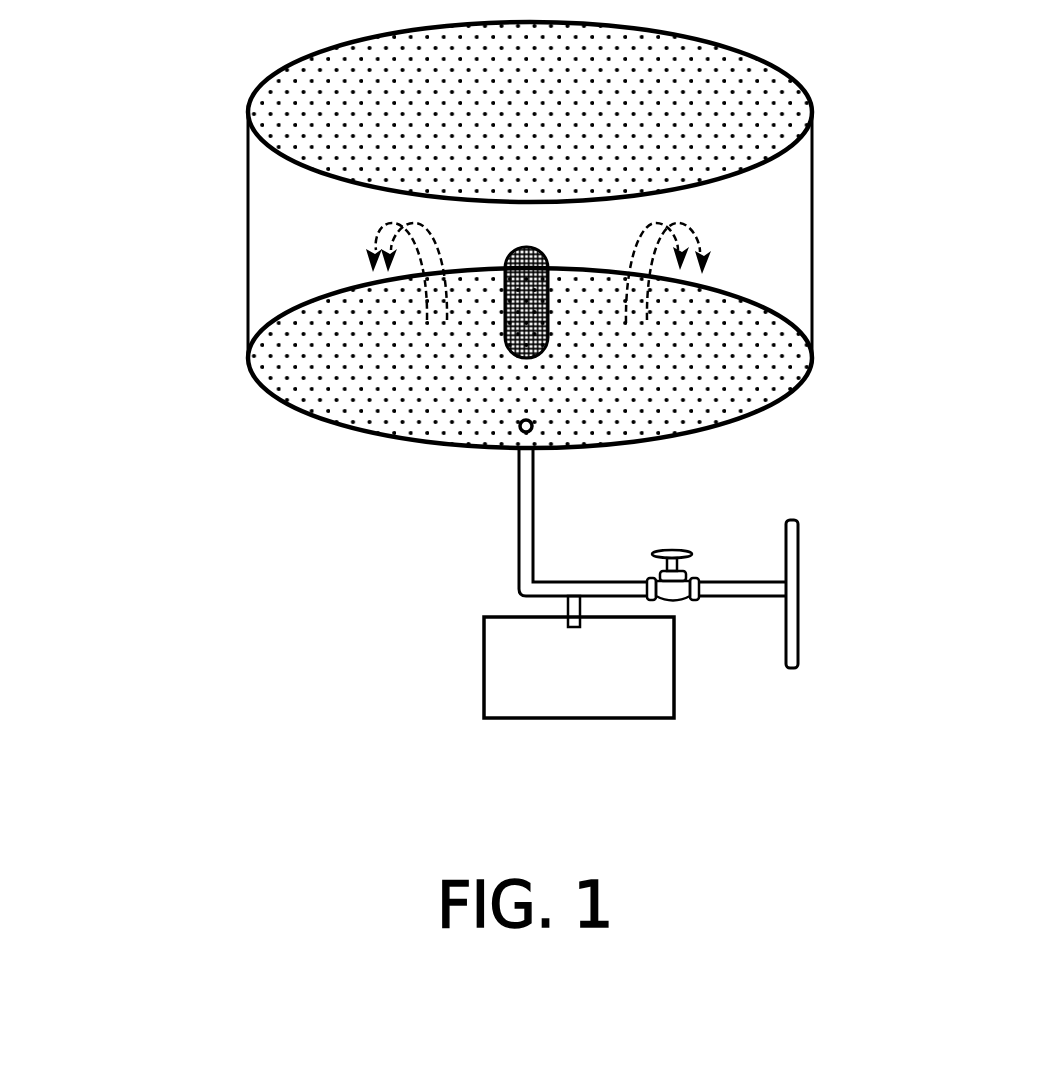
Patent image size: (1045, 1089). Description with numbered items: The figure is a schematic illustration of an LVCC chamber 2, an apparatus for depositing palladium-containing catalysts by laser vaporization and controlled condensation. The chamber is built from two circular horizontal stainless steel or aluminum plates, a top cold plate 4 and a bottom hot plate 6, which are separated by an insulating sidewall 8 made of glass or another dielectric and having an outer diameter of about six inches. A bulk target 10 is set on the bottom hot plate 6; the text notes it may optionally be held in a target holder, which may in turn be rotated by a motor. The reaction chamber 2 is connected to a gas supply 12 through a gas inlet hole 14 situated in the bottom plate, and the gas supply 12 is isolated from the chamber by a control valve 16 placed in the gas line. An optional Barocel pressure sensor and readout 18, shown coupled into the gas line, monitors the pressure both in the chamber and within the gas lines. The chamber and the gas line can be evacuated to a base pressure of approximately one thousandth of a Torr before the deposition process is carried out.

The LVCC chamber 2 is at (132, 78).
The top cold plate 4 is at (773, 92).
The bottom hot plate 6 is at (776, 381).
The sidewall 8 is at (248, 222).
The bulk target 10 is at (488, 329).
The gas supply 12 is at (798, 640).
The gas inlet hole 14 is at (566, 431).
The control valve 16 is at (688, 601).
The Barocel pressure sensor and readout 18 is at (580, 718).